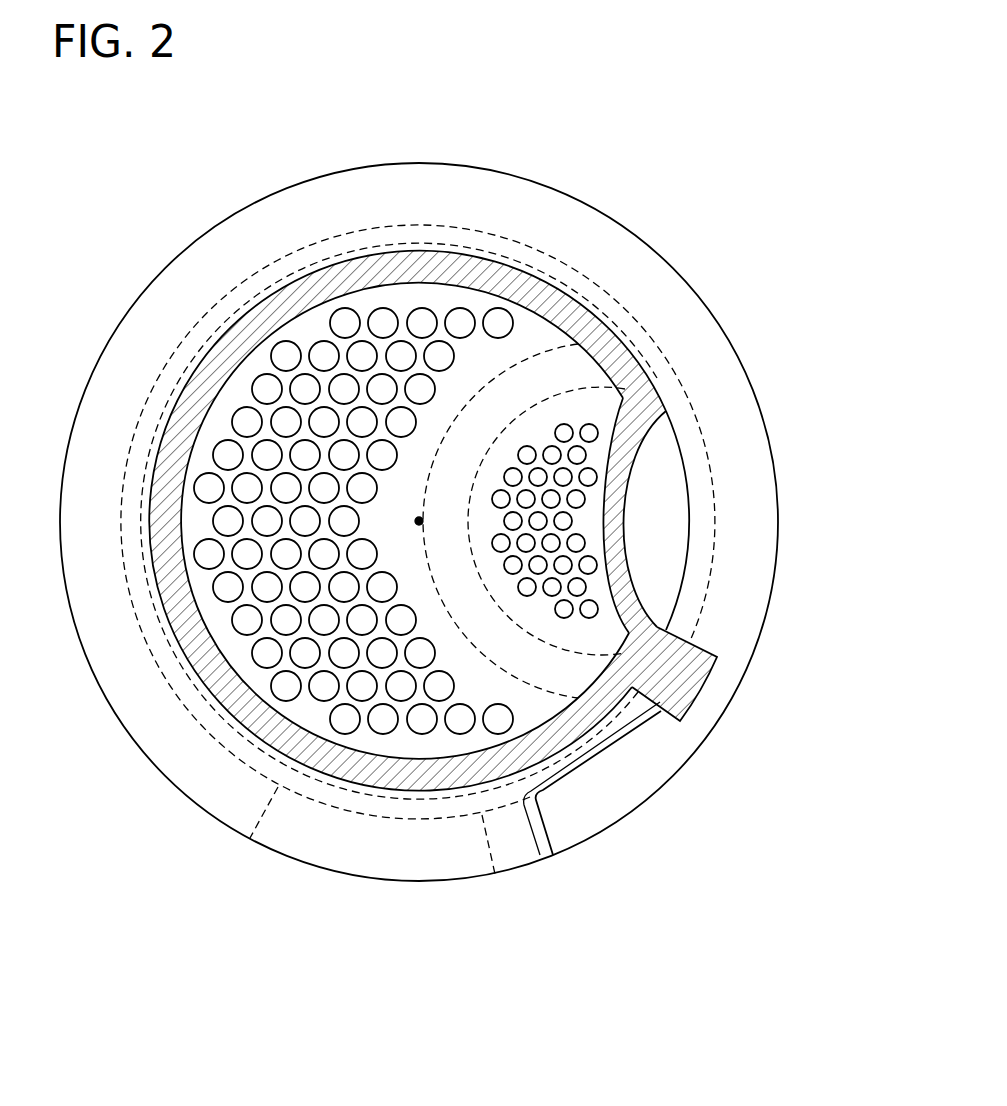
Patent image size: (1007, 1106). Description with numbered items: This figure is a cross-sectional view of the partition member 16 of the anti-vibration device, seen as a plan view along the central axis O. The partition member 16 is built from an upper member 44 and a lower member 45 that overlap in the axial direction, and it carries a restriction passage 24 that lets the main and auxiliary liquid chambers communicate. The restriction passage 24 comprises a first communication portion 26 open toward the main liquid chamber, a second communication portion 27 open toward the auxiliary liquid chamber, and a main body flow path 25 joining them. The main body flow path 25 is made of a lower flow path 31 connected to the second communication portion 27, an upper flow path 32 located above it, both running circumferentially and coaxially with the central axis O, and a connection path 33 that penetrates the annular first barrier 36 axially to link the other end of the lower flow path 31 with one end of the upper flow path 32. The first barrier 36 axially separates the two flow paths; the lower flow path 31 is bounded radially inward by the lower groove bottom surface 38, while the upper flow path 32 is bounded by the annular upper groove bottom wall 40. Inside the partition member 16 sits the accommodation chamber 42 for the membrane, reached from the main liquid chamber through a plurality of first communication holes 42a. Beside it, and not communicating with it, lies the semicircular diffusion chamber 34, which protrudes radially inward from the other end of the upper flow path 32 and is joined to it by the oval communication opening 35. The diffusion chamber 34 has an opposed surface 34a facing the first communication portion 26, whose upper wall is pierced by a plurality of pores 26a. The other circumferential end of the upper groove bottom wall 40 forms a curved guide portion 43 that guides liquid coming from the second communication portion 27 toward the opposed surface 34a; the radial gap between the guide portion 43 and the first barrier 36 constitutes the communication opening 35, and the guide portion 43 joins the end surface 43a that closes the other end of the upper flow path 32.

The central axis O is at (419, 521).
The partition member 16 is at (496, 522).
The restriction passage 24 is at (472, 495).
The main body flow path 25 is at (455, 859).
The first communication portion 26 is at (661, 451).
The pore 26a is at (566, 426).
The second communication portion 27 is at (365, 828).
The lower flow path 31 is at (458, 827).
The upper flow path 32 is at (410, 802).
The connection path 33 is at (572, 793).
The diffusion chamber 34 is at (556, 647).
The opposed surface 34a is at (660, 633).
The communication opening 35 is at (667, 457).
The first barrier 36 is at (767, 513).
The lower groove bottom surface 38 is at (648, 580).
The upper groove bottom wall 40 is at (488, 609).
The accommodation chamber 42 is at (261, 541).
The first communication hole 42a is at (243, 420).
The guide portion 43 is at (633, 500).
The end surface 43a is at (714, 659).
The upper member 44 is at (642, 345).
The lower member 45 is at (712, 408).